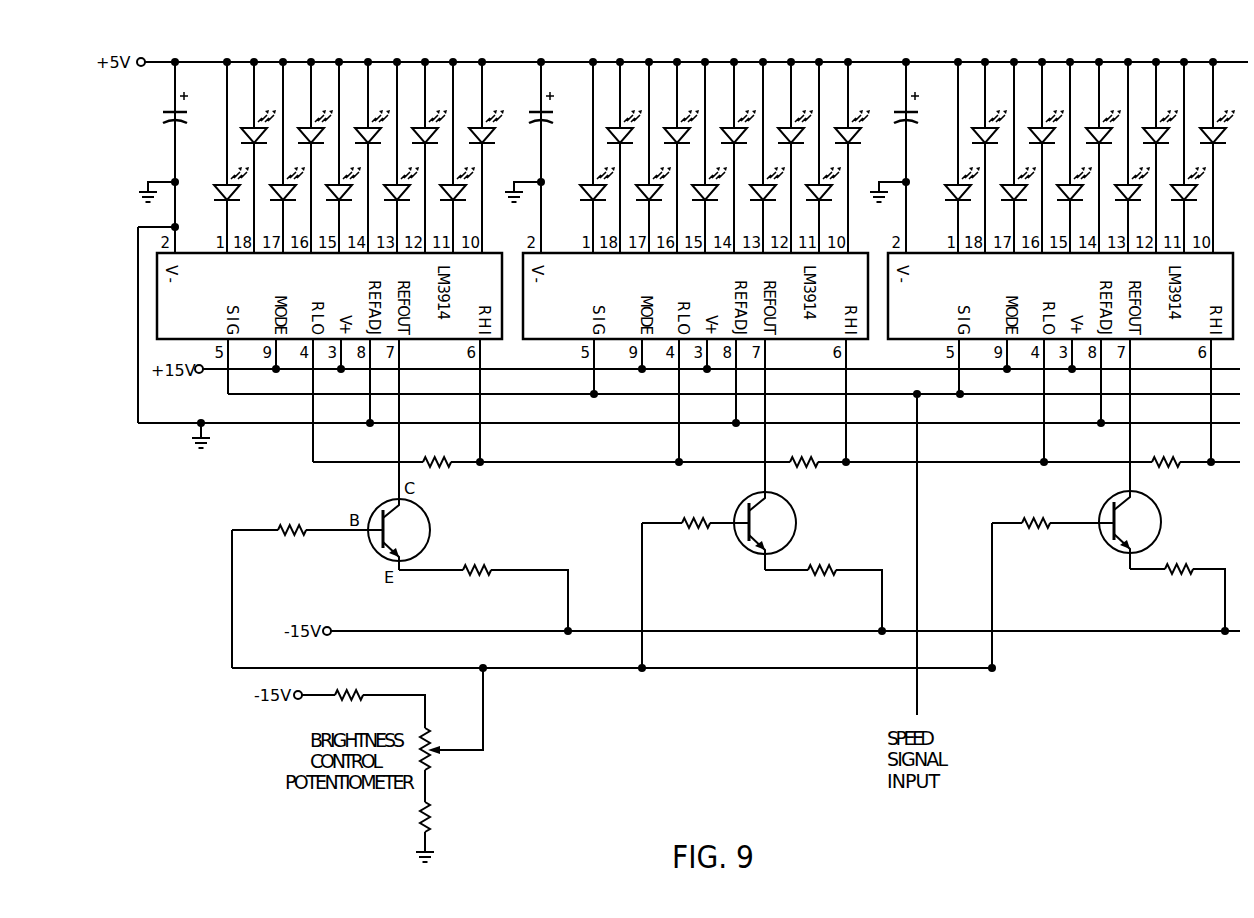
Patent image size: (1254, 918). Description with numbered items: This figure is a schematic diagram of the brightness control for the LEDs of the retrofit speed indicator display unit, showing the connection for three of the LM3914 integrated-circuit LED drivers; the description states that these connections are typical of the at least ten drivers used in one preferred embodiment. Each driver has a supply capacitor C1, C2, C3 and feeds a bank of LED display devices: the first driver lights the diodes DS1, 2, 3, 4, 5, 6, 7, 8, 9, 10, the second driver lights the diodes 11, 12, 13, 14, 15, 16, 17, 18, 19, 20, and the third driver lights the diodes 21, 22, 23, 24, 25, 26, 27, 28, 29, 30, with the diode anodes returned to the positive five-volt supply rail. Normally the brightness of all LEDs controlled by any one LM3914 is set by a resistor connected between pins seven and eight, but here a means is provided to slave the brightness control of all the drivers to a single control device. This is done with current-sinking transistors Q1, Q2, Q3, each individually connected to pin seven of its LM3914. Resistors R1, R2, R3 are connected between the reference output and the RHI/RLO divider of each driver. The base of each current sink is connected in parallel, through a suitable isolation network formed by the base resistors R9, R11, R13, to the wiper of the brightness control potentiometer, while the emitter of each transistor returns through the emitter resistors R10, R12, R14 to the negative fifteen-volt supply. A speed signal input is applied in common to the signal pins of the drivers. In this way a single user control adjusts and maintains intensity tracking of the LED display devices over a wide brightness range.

The light emitting diode DS1 is at (220, 197).
The light emitting diode 2 is at (257, 123).
The light emitting diode 3 is at (286, 197).
The light emitting diode 4 is at (314, 123).
The light emitting diode 5 is at (342, 197).
The light emitting diode 6 is at (371, 123).
The light emitting diode 7 is at (400, 197).
The light emitting diode 8 is at (428, 123).
The light emitting diode 9 is at (456, 197).
The light emitting diode 10 is at (480, 123).
The light emitting diode 11 is at (591, 197).
The light emitting diode 12 is at (618, 123).
The light emitting diode 13 is at (647, 197).
The light emitting diode 14 is at (675, 123).
The light emitting diode 15 is at (703, 197).
The light emitting diode 16 is at (732, 123).
The light emitting diode 17 is at (761, 197).
The light emitting diode 18 is at (789, 123).
The light emitting diode 19 is at (817, 197).
The light emitting diode 20 is at (846, 123).
The light emitting diode 21 is at (956, 197).
The light emitting diode 22 is at (983, 123).
The light emitting diode 23 is at (1012, 197).
The light emitting diode 24 is at (1040, 123).
The light emitting diode 25 is at (1068, 197).
The light emitting diode 26 is at (1097, 123).
The light emitting diode 27 is at (1126, 197).
The light emitting diode 28 is at (1154, 123).
The light emitting diode 29 is at (1182, 197).
The light emitting diode 30 is at (1211, 123).
The capacitor C1 is at (186, 116).
The capacitor C2 is at (552, 116).
The capacitor C3 is at (917, 116).
The resistor R1 is at (437, 451).
The resistor R2 is at (804, 451).
The resistor R3 is at (1166, 451).
The resistor R9 is at (307, 584).
The resistor R10 is at (483, 586).
The resistor R11 is at (695, 580).
The resistor R12 is at (823, 586).
The resistor R13 is at (1053, 580).
The resistor R14 is at (1177, 586).
The transistor Q1 is at (412, 525).
The transistor Q2 is at (779, 525).
The transistor Q3 is at (1144, 524).